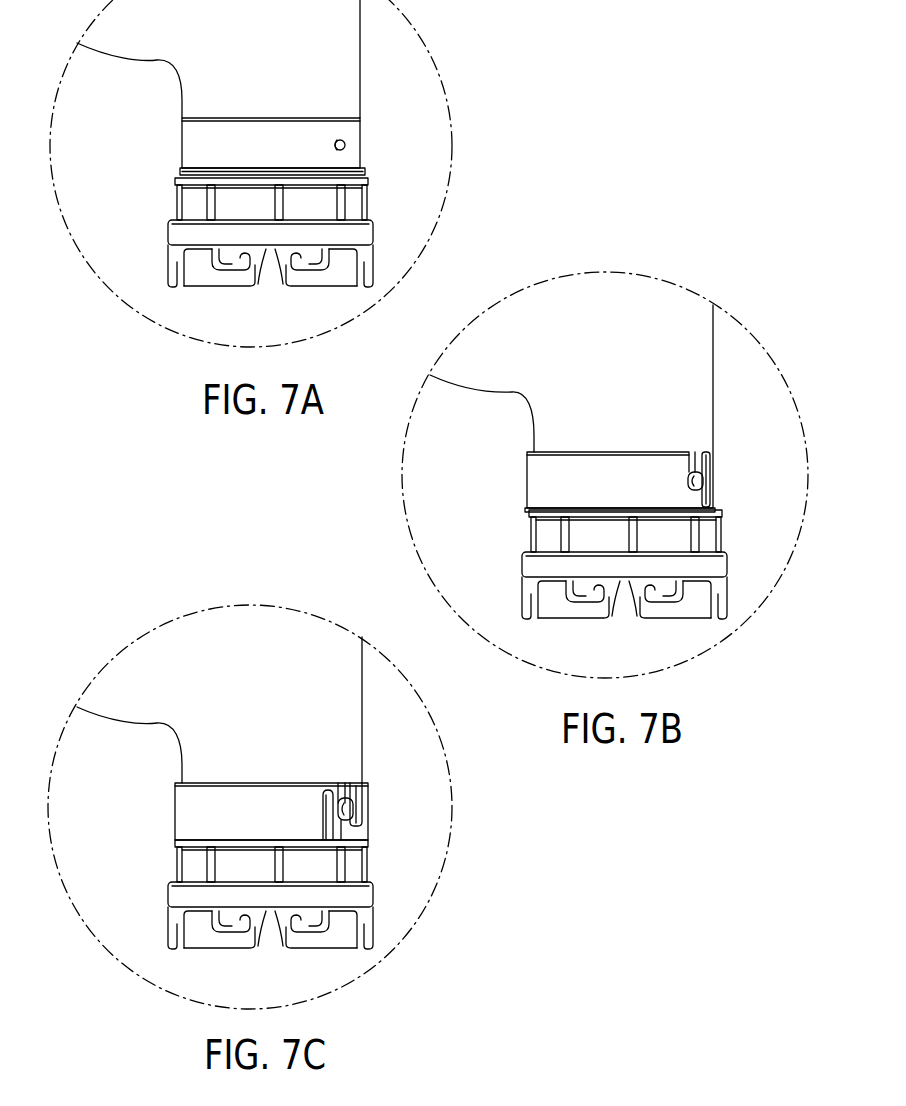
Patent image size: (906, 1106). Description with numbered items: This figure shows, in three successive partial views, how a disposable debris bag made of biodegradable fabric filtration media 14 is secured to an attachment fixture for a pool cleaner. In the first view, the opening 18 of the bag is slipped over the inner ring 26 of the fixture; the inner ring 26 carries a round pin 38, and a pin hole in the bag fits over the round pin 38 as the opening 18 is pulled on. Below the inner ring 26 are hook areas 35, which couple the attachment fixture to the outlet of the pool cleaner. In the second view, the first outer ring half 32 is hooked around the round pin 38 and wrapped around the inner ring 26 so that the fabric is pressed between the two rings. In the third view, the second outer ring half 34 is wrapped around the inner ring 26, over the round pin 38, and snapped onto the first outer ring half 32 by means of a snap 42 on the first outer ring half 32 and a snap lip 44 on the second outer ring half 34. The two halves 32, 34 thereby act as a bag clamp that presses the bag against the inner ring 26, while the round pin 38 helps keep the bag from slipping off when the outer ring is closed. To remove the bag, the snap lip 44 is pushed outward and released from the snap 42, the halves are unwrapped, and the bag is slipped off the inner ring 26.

In FIG. 7A, the biodegradable fabric filtration media 14 is at (343, 60).
In FIG. 7B, the biodegradable fabric filtration media 14 is at (695, 392).
In FIG. 7C, the biodegradable fabric filtration media 14 is at (343, 720).
In FIG. 7A, the opening 18 is at (200, 168).
In FIG. 7A, the inner ring 26 is at (353, 128).
In FIG. 7B, the first outer ring half 32 is at (542, 470).
In FIG. 7C, the first outer ring half 32 is at (193, 813).
In FIG. 7C, the second outer ring half 34 is at (370, 792).
In FIG. 7A, the hook areas 35 is at (323, 277).
In FIG. 7B, the hook areas 35 is at (624, 620).
In FIG. 7C, the hook areas 35 is at (270, 951).
In FIG. 7A, the round pin 38 is at (347, 145).
In FIG. 7B, the round pin 38 is at (703, 473).
In FIG. 7C, the round pin 38 is at (350, 810).
In FIG. 7B, the snap 42 is at (707, 487).
In FIG. 7C, the snap 42 is at (347, 820).
In FIG. 7C, the snap lip 44 is at (332, 813).